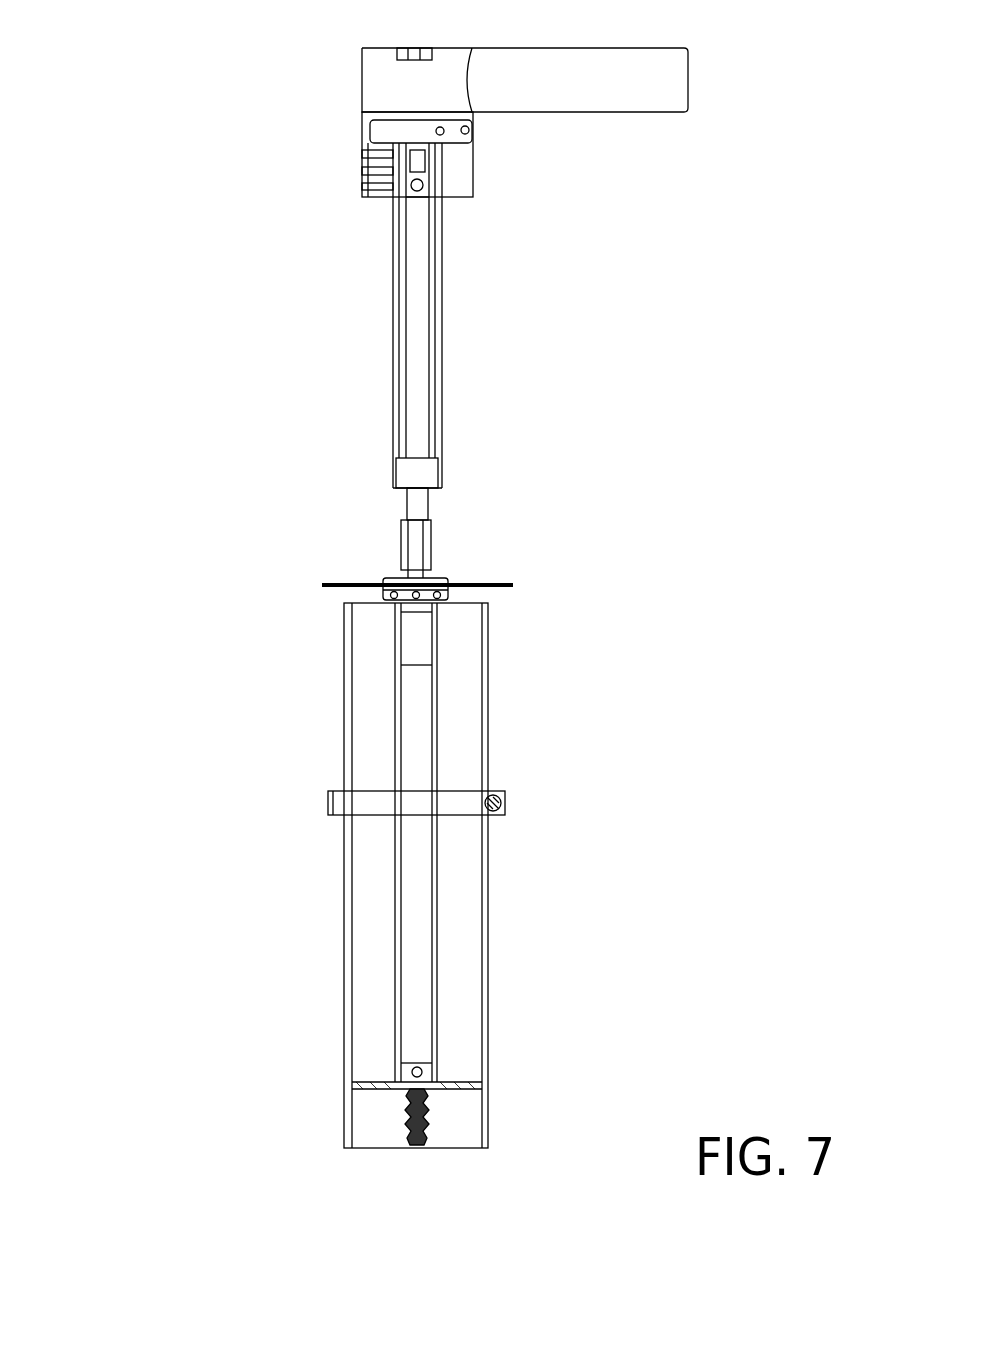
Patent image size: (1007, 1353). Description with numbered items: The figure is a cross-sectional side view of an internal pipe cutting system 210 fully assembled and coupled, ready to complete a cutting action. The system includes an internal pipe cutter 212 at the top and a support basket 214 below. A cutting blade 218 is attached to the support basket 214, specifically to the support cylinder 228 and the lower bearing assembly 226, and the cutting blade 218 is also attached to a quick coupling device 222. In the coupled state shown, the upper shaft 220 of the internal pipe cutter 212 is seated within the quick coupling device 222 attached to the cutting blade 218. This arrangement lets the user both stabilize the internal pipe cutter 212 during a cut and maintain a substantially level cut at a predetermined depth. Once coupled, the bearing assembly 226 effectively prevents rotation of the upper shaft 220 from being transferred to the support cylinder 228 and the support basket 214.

The internal pipe cutting system 210 is at (137, 100).
The internal pipe cutter 212 is at (507, 318).
The support basket 214 is at (525, 848).
The cutting blade 218 is at (335, 585).
The upper shaft 220 is at (415, 508).
The quick coupling device 222 is at (437, 564).
The bearing assembly 226 is at (427, 647).
The support cylinder 228 is at (423, 1003).